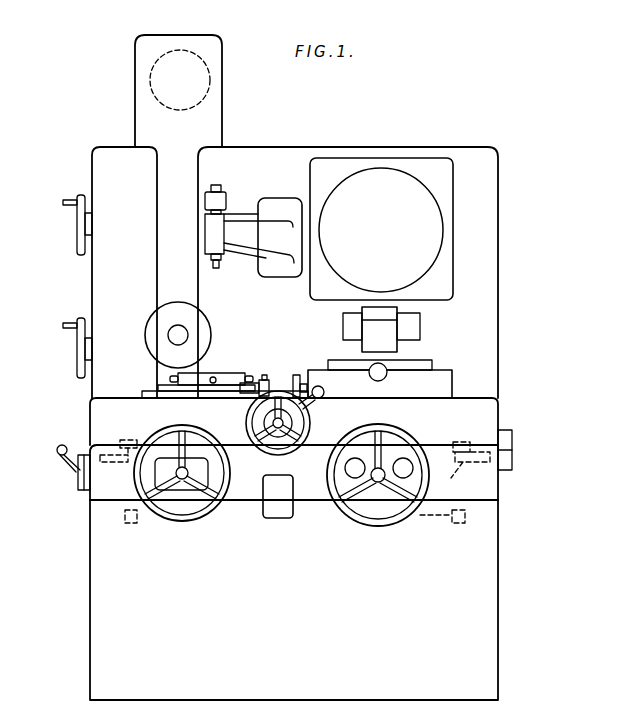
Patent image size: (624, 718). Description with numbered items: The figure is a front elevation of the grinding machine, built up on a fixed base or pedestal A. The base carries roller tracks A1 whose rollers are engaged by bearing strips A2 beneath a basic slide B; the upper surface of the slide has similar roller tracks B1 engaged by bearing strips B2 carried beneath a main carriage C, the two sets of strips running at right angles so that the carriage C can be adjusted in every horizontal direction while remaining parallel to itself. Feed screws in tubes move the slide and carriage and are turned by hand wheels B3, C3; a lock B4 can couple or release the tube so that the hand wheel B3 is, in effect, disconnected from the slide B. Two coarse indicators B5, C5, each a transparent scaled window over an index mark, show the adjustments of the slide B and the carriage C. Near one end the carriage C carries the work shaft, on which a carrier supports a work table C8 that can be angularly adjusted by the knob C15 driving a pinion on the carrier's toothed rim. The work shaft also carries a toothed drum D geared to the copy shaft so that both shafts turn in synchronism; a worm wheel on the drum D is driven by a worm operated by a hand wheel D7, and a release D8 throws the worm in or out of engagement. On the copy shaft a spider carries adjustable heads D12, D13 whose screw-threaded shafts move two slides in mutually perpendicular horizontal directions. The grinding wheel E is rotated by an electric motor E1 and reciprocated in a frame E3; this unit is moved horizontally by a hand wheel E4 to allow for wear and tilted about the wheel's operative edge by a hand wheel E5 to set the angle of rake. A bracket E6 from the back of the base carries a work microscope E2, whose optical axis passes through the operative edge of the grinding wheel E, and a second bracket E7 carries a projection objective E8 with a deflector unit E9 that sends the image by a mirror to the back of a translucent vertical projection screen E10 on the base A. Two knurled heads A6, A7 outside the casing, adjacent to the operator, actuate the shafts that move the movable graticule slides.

The fixed base or pedestal A is at (498, 603).
The roller tracks A1 is at (121, 524).
The bearing strips A2 is at (125, 516).
The knurled head A6 is at (354, 478).
The knurled head A7 is at (406, 478).
The basic slide B is at (475, 492).
The roller tracks B1 is at (123, 440).
The bearing strips B2 is at (90, 438).
The hand wheel B3 is at (172, 513).
The lock B4 is at (60, 458).
The coarse indicator B5 is at (276, 520).
The main carriage C is at (498, 405).
The hand wheel C3 is at (387, 527).
The coarse indicator C5 is at (512, 441).
The work table C8 is at (212, 372).
The knob C15 is at (262, 376).
The toothed drum D is at (278, 423).
The hand wheel D7 is at (274, 388).
The release D8 is at (317, 386).
The adjustable head D12 is at (295, 378).
The adjustable head D13 is at (372, 380).
The grinding wheel E is at (207, 113).
The electric motor E1 is at (208, 76).
The work microscope E2 is at (226, 200).
The frame E3 is at (105, 176).
The hand wheel E4 is at (78, 357).
The hand wheel E5 is at (78, 236).
The bracket E6 is at (242, 230).
The second bracket E7 is at (400, 340).
The projection objective E8 is at (384, 334).
The deflector unit E9 is at (380, 307).
The translucent vertical projection screen E10 is at (415, 237).